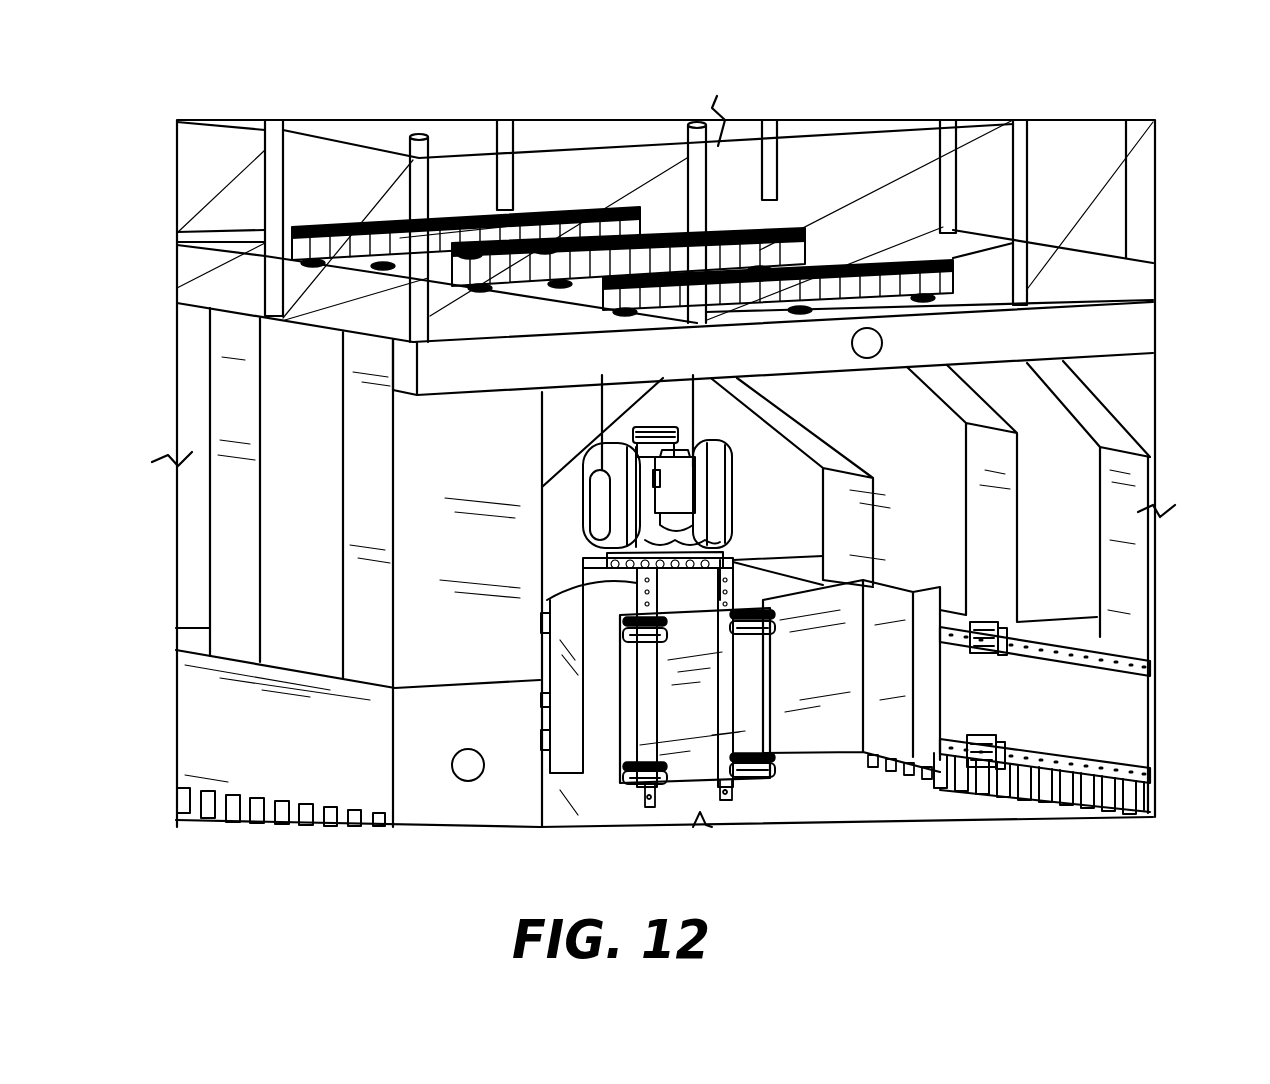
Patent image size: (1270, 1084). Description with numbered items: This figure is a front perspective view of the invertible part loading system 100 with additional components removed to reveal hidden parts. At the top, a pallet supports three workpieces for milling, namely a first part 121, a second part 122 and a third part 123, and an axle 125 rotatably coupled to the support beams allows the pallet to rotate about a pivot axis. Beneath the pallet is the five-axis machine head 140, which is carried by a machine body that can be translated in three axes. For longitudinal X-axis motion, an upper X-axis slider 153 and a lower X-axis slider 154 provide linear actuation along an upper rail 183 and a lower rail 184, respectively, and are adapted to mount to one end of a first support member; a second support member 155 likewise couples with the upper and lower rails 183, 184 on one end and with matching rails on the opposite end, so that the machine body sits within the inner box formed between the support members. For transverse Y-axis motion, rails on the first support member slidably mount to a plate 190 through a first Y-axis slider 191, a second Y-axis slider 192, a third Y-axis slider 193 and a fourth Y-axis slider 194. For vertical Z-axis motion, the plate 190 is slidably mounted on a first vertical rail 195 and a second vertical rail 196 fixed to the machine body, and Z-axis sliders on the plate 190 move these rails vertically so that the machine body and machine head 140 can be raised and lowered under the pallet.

The invertible part loading system 100 is at (258, 82).
The first part 121 is at (880, 255).
The second part 122 is at (815, 238).
The third part 123 is at (605, 219).
The axle 125 is at (883, 340).
The machine head 140 is at (598, 460).
The upper X-axis slider 153 is at (994, 652).
The lower X-axis slider 154 is at (987, 770).
The second support member 155 is at (827, 738).
The upper rail 183 is at (1153, 662).
The lower rail 184 is at (1148, 775).
The plate 190 is at (700, 770).
The first Y-axis slider 191 is at (645, 644).
The second Y-axis slider 192 is at (640, 802).
The third Y-axis slider 193 is at (759, 635).
The fourth Y-axis slider 194 is at (759, 787).
The first vertical rail 195 is at (549, 598).
The second vertical rail 196 is at (730, 557).